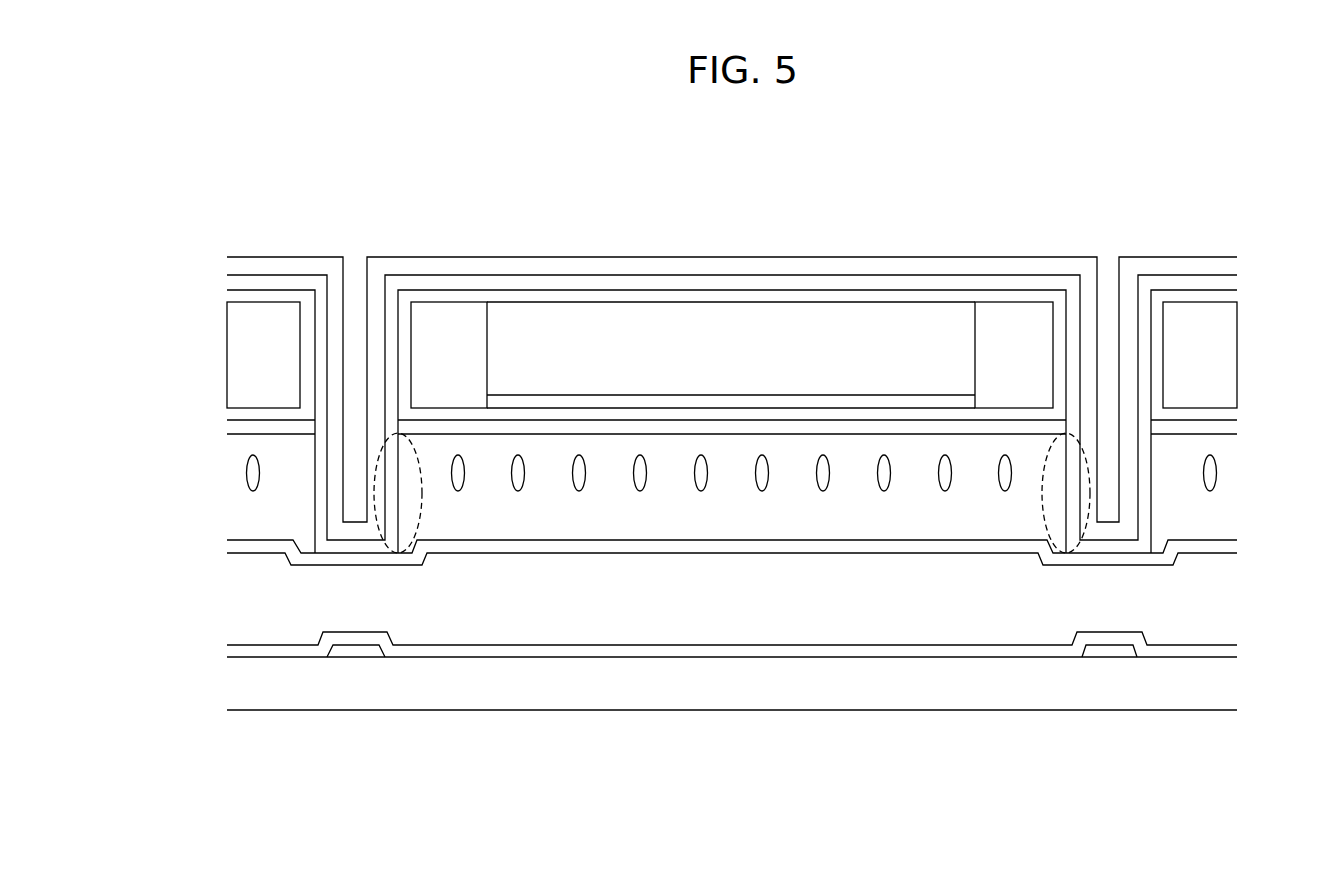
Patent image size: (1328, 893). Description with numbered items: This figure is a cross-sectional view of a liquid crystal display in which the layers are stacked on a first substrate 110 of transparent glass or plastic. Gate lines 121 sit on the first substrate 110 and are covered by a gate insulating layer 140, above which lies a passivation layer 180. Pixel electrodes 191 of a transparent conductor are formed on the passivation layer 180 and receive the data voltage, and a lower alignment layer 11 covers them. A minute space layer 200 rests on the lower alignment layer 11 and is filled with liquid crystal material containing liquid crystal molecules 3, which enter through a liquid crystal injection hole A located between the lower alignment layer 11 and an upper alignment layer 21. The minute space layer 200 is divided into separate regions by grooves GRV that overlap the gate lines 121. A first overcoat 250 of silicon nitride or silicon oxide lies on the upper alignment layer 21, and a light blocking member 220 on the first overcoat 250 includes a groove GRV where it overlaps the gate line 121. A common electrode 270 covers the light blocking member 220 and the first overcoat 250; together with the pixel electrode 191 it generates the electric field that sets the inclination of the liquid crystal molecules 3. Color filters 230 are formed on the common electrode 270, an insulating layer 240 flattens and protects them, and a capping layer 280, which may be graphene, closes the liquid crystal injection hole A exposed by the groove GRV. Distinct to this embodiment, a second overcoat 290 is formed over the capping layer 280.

The liquid crystal molecules 3 is at (580, 490).
The lower alignment layer 11 is at (666, 546).
The upper alignment layer 21 is at (708, 430).
The first substrate 110 is at (1017, 690).
The gate line 121 is at (1112, 650).
The gate insulating layer 140 is at (843, 650).
The passivation layer 180 is at (452, 622).
The pixel electrode 191 is at (767, 559).
The minute space layer 200 is at (915, 523).
The light blocking member 220 is at (453, 310).
The color filter 230 is at (772, 330).
The insulating layer 240 is at (857, 297).
The first overcoat 250 is at (627, 415).
The common electrode 270 is at (538, 400).
The capping layer 280 is at (928, 283).
The second overcoat 290 is at (1017, 267).
The groove GRV is at (356, 272).
The liquid crystal injection hole A is at (375, 503).